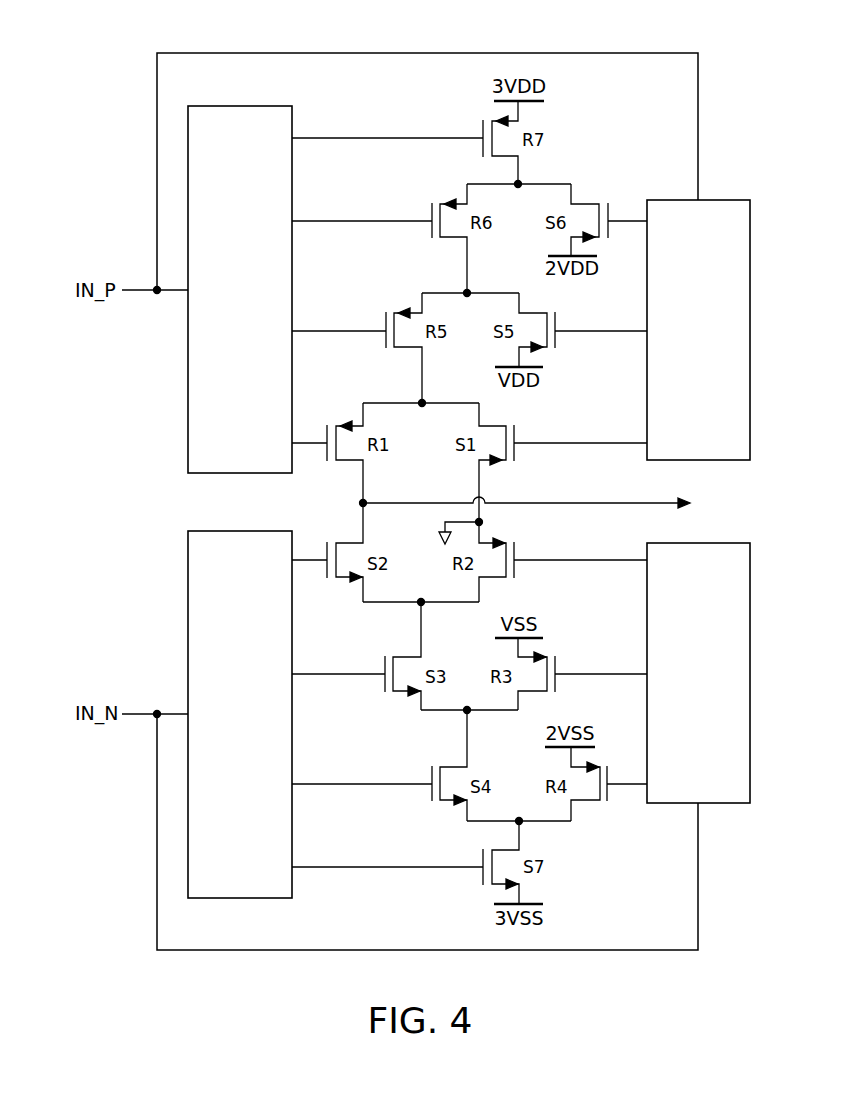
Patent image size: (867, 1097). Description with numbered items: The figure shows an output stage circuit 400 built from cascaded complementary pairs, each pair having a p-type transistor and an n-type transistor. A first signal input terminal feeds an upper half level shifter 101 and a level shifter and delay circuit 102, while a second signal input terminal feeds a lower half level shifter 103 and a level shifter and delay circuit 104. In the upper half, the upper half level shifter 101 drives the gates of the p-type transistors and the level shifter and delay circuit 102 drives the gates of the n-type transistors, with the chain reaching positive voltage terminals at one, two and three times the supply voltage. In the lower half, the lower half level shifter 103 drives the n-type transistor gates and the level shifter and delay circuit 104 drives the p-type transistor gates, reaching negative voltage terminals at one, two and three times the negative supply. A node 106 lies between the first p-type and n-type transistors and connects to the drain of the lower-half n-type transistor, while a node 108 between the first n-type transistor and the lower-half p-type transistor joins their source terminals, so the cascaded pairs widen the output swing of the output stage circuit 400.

The output stage circuit 400 is at (152, 21).
The upper half level shifter 101 is at (188, 384).
The level shifter and delay circuit 102 is at (723, 199).
The lower half level shifter 103 is at (188, 620).
The level shifter and delay circuit 104 is at (718, 805).
The node 106 is at (366, 500).
The node 108 is at (483, 523).